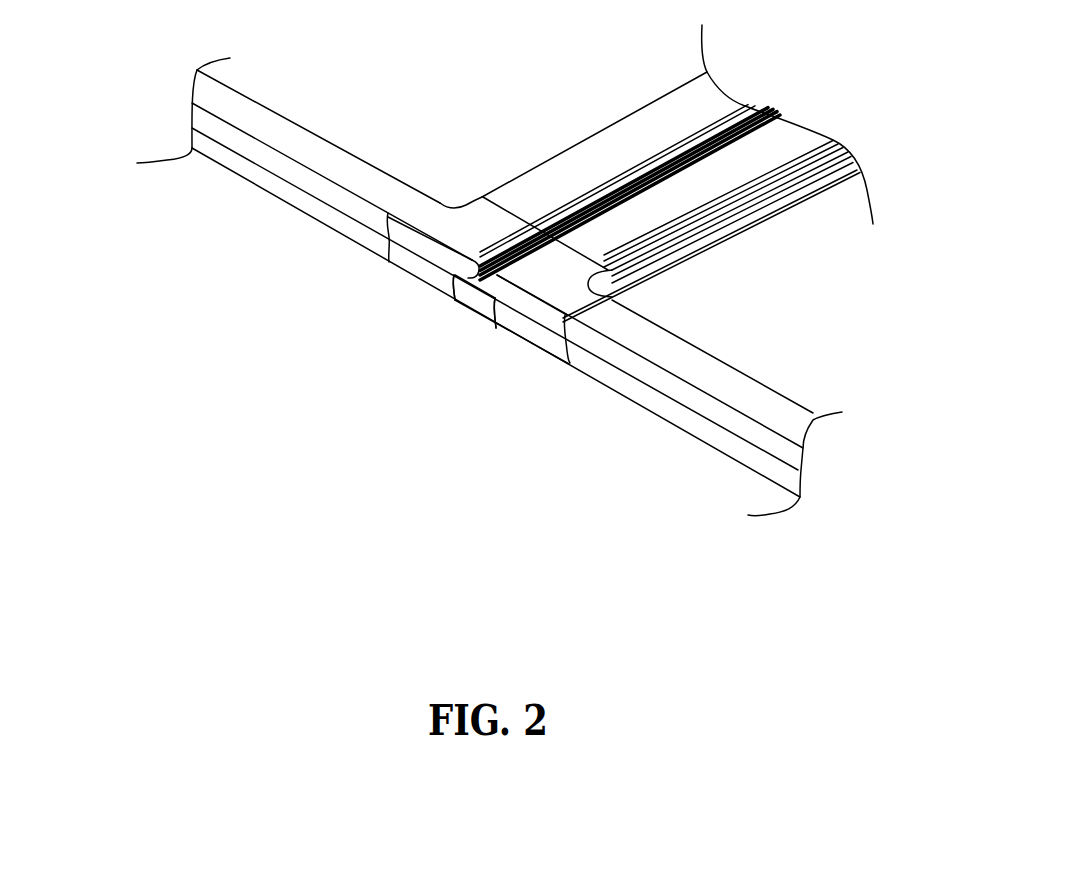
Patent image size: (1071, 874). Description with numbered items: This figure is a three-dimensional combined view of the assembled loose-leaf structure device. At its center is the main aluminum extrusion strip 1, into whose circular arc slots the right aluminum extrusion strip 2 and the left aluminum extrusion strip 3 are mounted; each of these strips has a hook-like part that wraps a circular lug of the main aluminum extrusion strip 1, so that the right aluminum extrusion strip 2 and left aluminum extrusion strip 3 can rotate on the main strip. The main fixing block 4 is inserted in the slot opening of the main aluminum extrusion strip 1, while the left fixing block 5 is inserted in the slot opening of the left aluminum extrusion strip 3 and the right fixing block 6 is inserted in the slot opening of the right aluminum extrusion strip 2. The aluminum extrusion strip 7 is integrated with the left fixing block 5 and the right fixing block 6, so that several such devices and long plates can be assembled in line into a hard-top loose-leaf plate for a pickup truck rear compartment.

The main aluminum extrusion strip 1 is at (753, 118).
The right aluminum extrusion strip 2 is at (713, 182).
The left aluminum extrusion strip 3 is at (613, 142).
The main fixing block 4 is at (477, 303).
The left fixing block 5 is at (417, 268).
The right fixing block 6 is at (535, 333).
The aluminum extrusion strip 7 is at (262, 186).